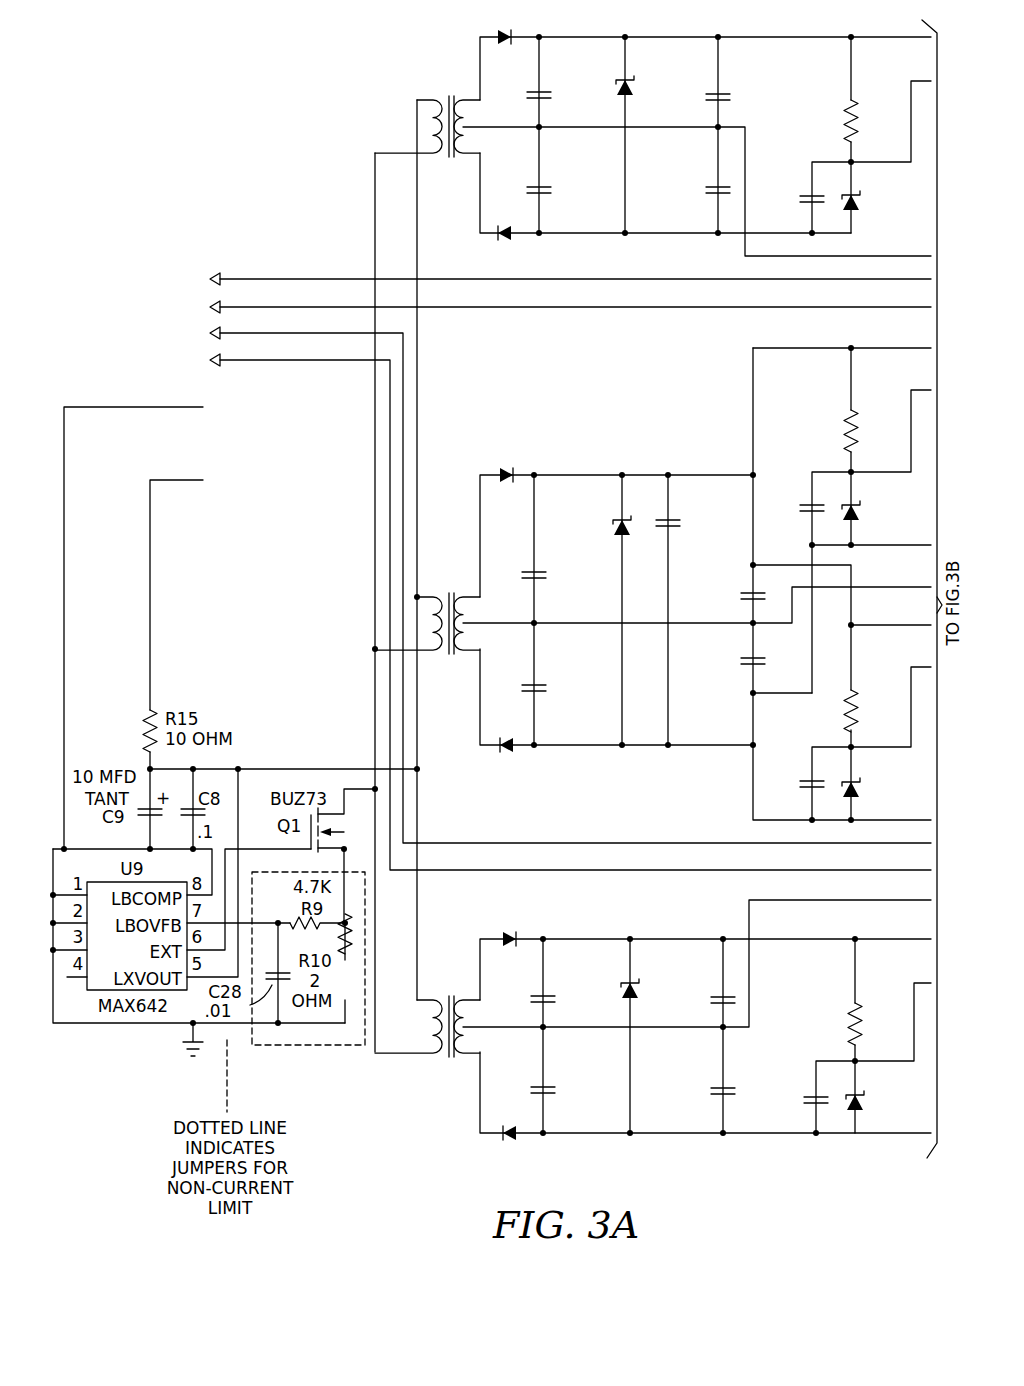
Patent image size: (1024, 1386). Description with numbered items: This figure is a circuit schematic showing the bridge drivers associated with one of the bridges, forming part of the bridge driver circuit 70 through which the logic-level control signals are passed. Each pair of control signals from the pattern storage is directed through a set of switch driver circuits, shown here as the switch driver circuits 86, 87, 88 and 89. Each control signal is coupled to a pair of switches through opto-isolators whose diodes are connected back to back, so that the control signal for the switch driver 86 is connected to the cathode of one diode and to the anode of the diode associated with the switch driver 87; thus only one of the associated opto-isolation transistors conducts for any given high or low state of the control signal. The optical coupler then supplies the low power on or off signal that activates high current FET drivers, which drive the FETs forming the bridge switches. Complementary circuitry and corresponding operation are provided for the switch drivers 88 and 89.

The bridge driver circuit 70 is at (338, 197).
The switch driver circuit 86 is at (393, 122).
The switch driver circuit 87 is at (741, 471).
The switch driver circuit 88 is at (742, 826).
The switch driver circuit 89 is at (461, 1151).